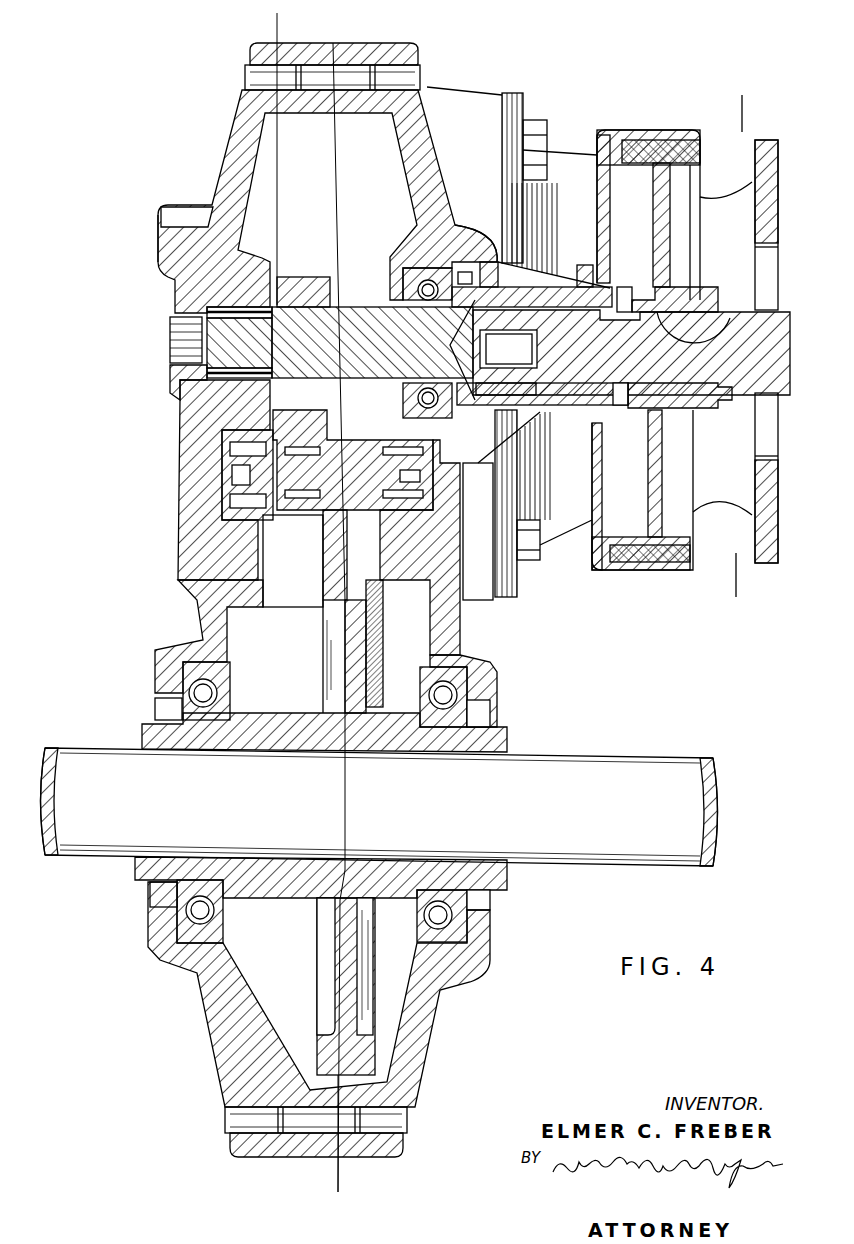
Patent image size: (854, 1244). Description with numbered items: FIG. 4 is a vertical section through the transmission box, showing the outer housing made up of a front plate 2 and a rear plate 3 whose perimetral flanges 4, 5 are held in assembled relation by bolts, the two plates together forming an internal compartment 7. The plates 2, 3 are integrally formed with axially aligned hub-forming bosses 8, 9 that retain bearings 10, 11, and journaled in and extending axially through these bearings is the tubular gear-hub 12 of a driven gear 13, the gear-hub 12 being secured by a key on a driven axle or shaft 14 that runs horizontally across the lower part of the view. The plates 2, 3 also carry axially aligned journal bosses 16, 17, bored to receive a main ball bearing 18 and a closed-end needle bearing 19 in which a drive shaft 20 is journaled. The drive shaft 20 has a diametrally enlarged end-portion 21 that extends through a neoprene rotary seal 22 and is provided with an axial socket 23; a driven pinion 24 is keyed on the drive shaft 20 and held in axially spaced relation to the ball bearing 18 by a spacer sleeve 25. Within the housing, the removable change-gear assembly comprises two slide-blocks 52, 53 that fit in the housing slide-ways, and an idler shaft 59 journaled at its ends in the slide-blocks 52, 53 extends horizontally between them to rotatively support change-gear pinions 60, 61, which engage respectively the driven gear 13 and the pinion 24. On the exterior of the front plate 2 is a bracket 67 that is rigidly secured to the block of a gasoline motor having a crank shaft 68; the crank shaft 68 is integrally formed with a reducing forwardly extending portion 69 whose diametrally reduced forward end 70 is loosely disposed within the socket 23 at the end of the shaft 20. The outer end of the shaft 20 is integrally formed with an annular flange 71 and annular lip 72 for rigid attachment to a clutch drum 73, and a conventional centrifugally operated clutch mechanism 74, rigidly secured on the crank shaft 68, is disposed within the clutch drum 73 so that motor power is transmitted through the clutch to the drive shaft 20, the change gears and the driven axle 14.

The front plate 2 is at (430, 1032).
The rear plate 3 is at (203, 1023).
The perimetral flange 4 is at (337, 110).
The perimetral flange 5 is at (275, 13).
The internal compartment 7 is at (410, 634).
The hub-forming boss 8 is at (491, 677).
The hub-forming boss 9 is at (156, 668).
The bearing 10 is at (420, 672).
The bearing 11 is at (230, 670).
The tubular gear-hub 12 is at (508, 735).
The driven gear 13 is at (332, 610).
The driven axle or shaft 14 is at (112, 745).
The journal boss 16 is at (417, 243).
The journal boss 17 is at (176, 295).
The main ball bearing 18 is at (412, 283).
The closed-end needle bearing 19 is at (236, 312).
The drive shaft 20 is at (366, 305).
The diametrally enlarged end-portion 21 is at (540, 412).
The neoprene rotary seal 22 is at (550, 262).
The axial socket 23 is at (487, 390).
The driven pinion 24 is at (310, 277).
The spacer sleeve 25 is at (360, 300).
The slide-block 52 is at (403, 522).
The slide-block 53 is at (230, 427).
The idler shaft 59 is at (283, 444).
The change-gear pinion 60 is at (307, 543).
The change-gear pinion 61 is at (358, 412).
The bracket 67 is at (779, 202).
The crank shaft 68 is at (786, 311).
The reducing forwardly extending portion 69 is at (623, 300).
The diametrally reduced forward end 70 is at (491, 367).
The annular flange 71 is at (597, 266).
The annular lip 72 is at (612, 415).
The clutch drum 73 is at (600, 133).
The centrifugally operated clutch mechanism 74 is at (662, 492).